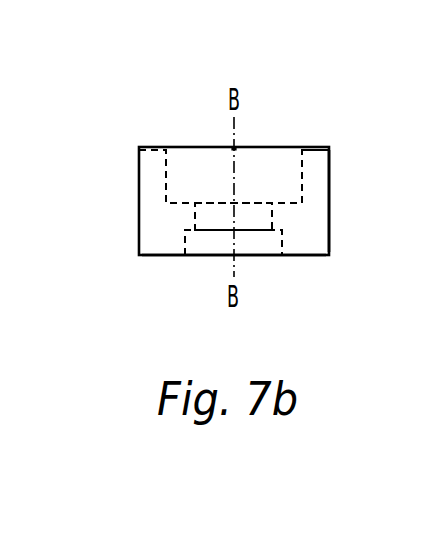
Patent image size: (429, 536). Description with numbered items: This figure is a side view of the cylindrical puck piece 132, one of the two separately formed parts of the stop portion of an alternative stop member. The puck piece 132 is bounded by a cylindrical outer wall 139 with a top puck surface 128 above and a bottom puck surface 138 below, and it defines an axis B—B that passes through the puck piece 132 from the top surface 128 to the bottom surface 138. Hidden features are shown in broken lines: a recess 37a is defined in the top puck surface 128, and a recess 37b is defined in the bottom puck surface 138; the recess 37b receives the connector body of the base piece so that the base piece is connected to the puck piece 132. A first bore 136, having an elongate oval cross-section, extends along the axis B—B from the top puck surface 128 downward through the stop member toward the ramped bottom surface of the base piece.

The cylindrical puck piece 132 is at (108, 143).
The recess 37a is at (166, 174).
The recess 37b is at (188, 252).
The first bore 136 is at (205, 208).
The top puck surface 128 is at (313, 148).
The cylindrical outer wall 139 is at (329, 213).
The bottom puck surface 138 is at (305, 255).